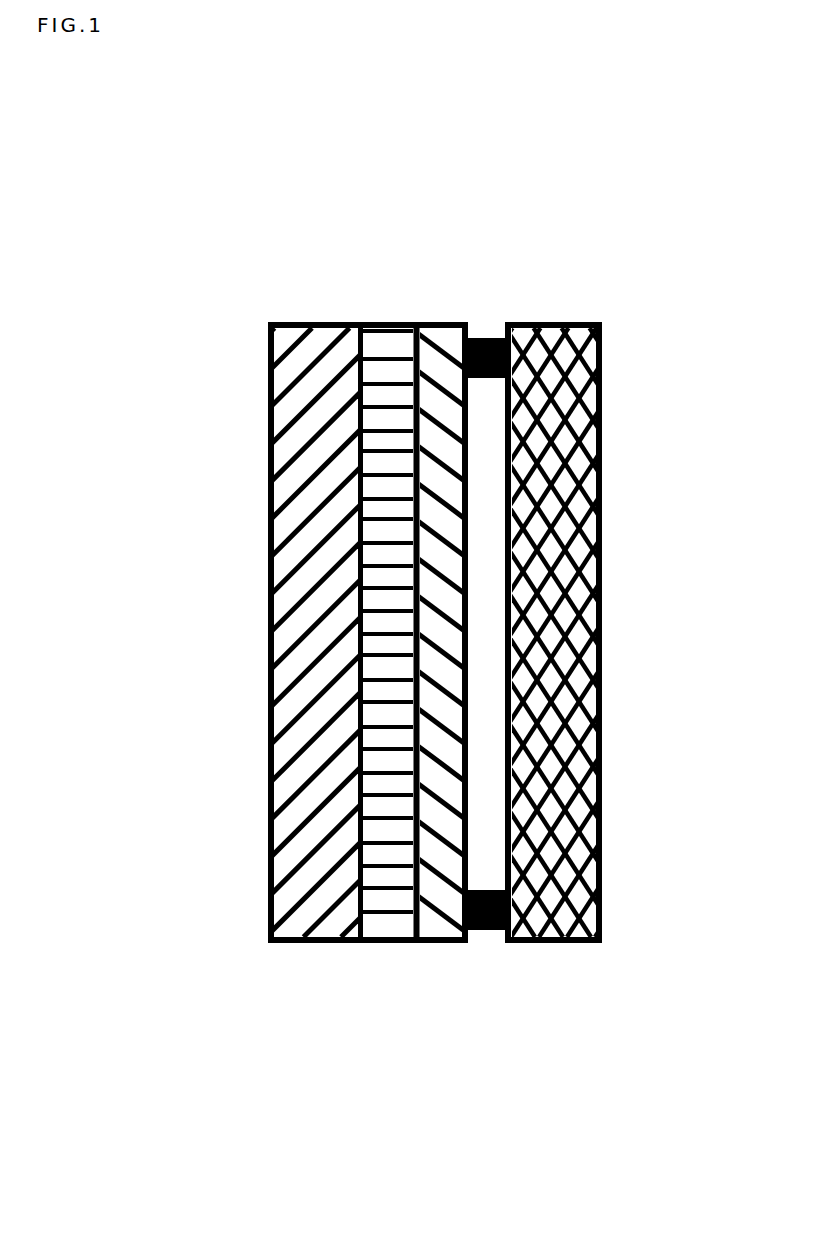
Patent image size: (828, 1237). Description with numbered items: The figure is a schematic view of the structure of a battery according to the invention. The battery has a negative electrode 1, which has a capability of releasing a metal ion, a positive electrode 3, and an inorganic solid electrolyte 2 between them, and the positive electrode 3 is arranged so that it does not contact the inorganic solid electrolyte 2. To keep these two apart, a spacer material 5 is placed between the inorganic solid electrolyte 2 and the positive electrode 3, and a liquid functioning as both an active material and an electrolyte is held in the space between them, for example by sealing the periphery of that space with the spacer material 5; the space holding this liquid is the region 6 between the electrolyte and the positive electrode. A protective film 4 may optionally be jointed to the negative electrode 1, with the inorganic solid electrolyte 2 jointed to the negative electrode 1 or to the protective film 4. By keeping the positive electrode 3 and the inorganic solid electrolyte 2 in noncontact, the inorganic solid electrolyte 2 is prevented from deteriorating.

The negative electrode 1 is at (313, 306).
The inorganic solid electrolyte 2 is at (442, 306).
The positive electrode 3 is at (555, 306).
The protective film 4 is at (388, 958).
The spacer material 5 is at (483, 948).
The gap / electrolyte space 6 is at (484, 716).